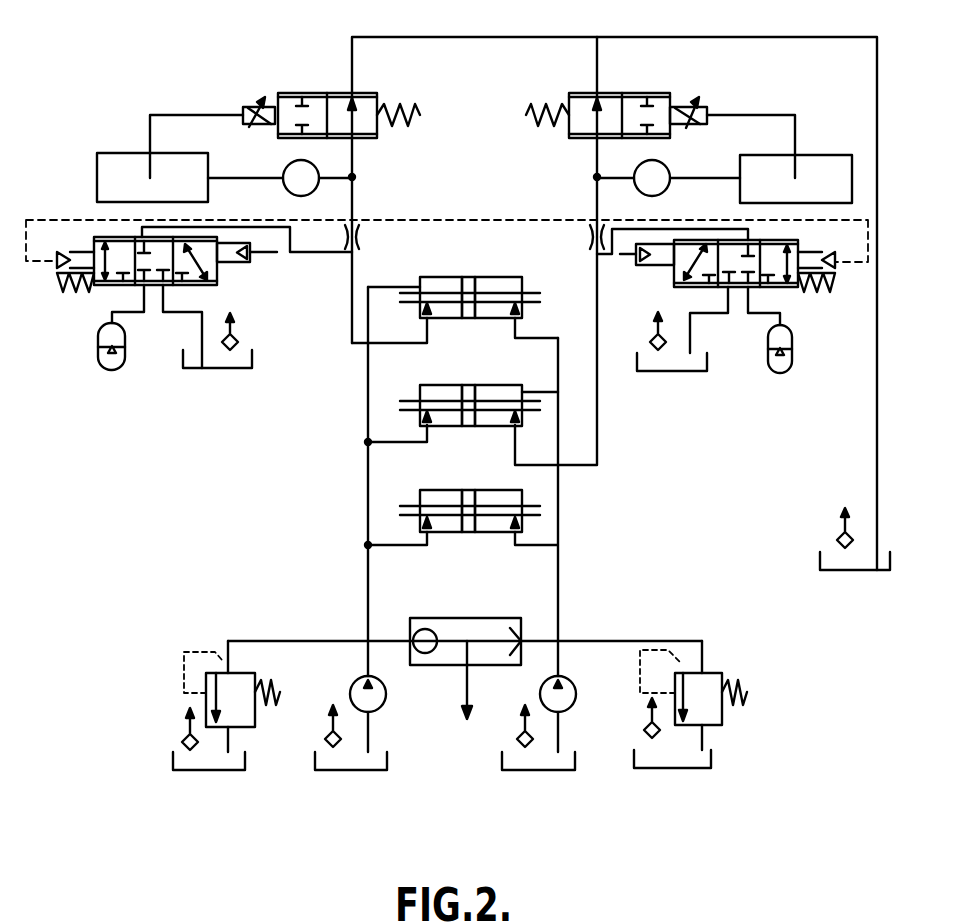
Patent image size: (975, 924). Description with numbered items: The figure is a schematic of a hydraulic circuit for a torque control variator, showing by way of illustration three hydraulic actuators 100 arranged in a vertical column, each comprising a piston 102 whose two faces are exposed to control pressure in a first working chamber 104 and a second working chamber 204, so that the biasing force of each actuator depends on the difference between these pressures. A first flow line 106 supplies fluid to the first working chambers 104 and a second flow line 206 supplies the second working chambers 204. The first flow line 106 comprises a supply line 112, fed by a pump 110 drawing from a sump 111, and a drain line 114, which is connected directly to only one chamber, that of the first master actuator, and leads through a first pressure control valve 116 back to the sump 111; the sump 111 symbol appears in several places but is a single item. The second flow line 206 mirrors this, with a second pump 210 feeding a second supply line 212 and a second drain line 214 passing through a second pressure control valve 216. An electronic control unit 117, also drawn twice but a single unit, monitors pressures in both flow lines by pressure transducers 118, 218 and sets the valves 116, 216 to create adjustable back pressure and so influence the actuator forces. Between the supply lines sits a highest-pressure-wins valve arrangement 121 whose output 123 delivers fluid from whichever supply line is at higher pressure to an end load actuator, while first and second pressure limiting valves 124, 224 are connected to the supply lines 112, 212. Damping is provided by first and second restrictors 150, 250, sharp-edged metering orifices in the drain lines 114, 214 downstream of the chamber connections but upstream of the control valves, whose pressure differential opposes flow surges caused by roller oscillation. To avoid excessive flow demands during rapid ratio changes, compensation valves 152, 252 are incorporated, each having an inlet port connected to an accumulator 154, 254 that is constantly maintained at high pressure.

The hydraulic actuator 100 is at (469, 415).
The piston 102 is at (498, 282).
The first working chamber 104 is at (442, 282).
The second working chamber 204 is at (546, 356).
The first flow line 106 is at (331, 399).
The second flow line 206 is at (581, 508).
The pump 110 is at (375, 712).
The second pump 210 is at (566, 712).
The sump 111 is at (318, 772).
The supply line 112 is at (365, 641).
The second supply line 212 is at (560, 640).
The drain line 114 is at (352, 73).
The second drain line 214 is at (597, 168).
The first pressure control valve 116 is at (372, 93).
The second pressure control valve 216 is at (640, 93).
The electronic control unit 117 is at (120, 168).
The pressure transducer 118 is at (300, 166).
The pressure transducer 218 is at (653, 168).
The valve arrangement 121 is at (420, 667).
The output 123 is at (470, 680).
The first pressure limiting valve 124 is at (176, 711).
The second pressure limiting valve 224 is at (727, 722).
The first restrictor 150 is at (358, 237).
The second restrictor 250 is at (532, 213).
The compensation valve 152 is at (86, 317).
The compensation valve 252 is at (799, 312).
The accumulator 154 is at (112, 372).
The accumulator 254 is at (780, 375).